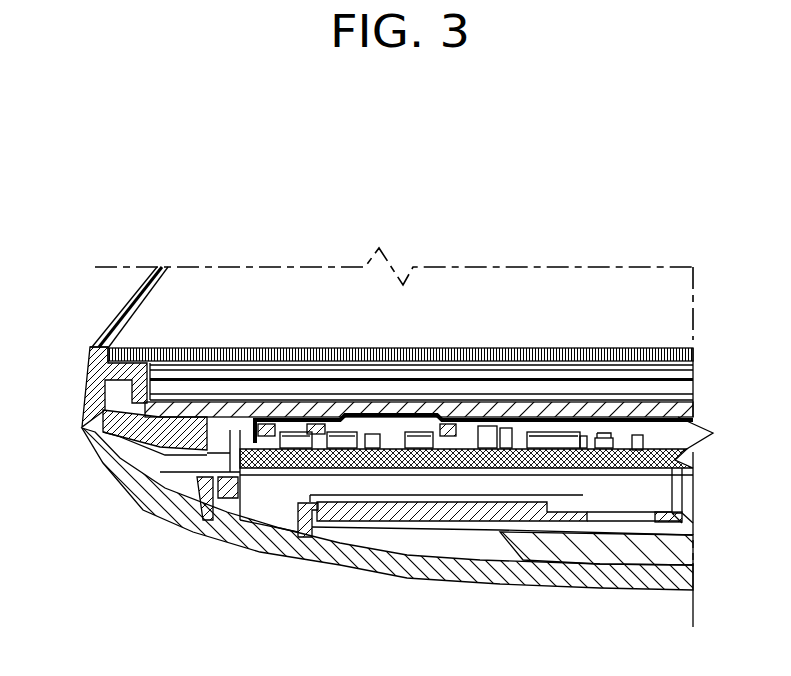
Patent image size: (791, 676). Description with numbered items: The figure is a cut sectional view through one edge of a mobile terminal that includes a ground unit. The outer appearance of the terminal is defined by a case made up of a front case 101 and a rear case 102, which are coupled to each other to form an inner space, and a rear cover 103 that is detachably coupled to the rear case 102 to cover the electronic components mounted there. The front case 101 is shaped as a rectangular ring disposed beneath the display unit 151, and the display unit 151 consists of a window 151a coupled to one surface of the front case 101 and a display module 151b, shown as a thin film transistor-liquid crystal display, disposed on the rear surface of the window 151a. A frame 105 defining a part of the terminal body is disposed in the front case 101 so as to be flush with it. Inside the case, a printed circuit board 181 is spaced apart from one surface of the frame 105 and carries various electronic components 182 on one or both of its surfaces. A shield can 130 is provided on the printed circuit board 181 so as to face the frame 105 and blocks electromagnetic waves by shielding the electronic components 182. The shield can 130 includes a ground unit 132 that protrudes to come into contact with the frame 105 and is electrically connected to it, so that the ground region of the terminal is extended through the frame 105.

The front case 101 is at (87, 380).
The rear case 102 is at (172, 465).
The rear cover 103 is at (230, 527).
The frame 105 is at (503, 408).
The shield can 130 is at (258, 405).
The ground unit 132 is at (400, 403).
The display unit 151 is at (392, 258).
The window 151a is at (215, 293).
The display module 151b is at (290, 353).
The printed circuit board 181 is at (607, 466).
The electronic components 182 is at (417, 448).